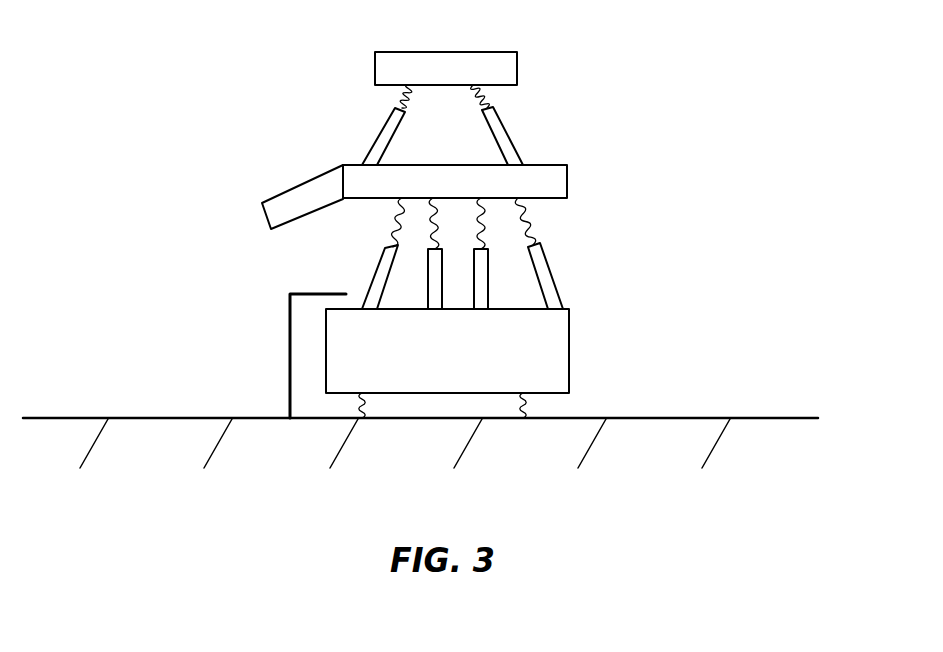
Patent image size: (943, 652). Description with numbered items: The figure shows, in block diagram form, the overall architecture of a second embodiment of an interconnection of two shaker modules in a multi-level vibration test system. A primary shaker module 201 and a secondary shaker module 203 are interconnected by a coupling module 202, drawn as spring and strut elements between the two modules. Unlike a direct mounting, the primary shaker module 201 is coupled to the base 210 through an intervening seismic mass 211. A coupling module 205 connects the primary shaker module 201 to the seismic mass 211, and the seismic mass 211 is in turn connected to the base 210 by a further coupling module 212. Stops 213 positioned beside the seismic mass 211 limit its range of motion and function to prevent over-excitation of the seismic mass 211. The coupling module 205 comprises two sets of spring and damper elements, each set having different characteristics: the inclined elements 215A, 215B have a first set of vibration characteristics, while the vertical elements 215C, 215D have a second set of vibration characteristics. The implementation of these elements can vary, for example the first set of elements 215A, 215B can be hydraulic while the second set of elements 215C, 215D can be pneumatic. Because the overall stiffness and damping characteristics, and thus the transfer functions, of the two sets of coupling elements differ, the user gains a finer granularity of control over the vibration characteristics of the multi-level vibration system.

The primary shaker module 201 is at (567, 175).
The coupling module 202 is at (550, 118).
The secondary shaker module 203 is at (517, 62).
The coupling module 205 is at (583, 259).
The base 210 is at (718, 417).
The seismic mass 211 is at (570, 343).
The coupling module 212 is at (523, 410).
The stops 213 is at (289, 303).
The spring and damper element 215A is at (387, 258).
The spring and damper element 215B is at (543, 252).
The spring and damper element 215C is at (432, 298).
The spring and damper element 215D is at (485, 293).